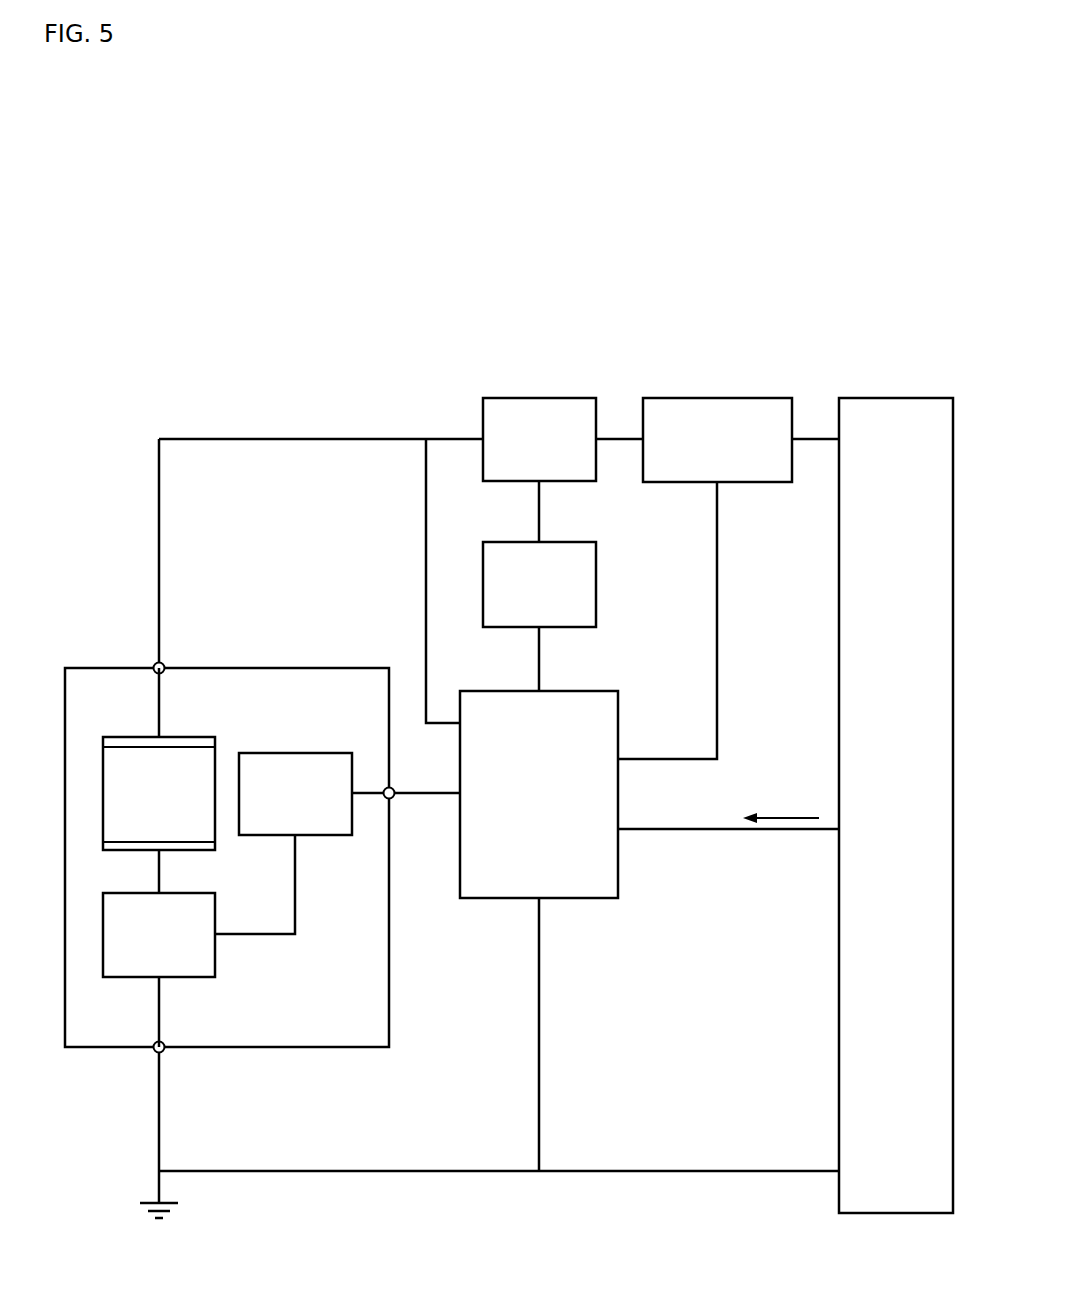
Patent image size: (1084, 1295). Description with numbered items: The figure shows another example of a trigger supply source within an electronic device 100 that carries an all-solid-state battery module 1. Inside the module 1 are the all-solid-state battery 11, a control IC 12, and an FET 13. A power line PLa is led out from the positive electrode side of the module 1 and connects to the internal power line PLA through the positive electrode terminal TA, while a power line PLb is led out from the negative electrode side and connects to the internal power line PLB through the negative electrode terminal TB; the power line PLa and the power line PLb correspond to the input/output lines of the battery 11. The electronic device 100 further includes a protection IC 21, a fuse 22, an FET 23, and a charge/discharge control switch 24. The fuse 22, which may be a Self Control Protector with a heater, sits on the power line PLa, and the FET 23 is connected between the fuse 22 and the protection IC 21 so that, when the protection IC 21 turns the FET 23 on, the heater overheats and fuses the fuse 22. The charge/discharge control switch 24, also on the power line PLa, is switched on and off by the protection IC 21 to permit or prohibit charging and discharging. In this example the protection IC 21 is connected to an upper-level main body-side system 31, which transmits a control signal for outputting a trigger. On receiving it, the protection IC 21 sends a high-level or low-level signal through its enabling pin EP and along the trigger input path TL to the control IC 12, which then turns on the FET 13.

The electronic device 100 is at (443, 287).
The all-solid-state battery module 1 is at (231, 667).
The all-solid-state battery 11 is at (178, 737).
The control IC 12 is at (293, 752).
The FET 13 is at (178, 893).
The protection IC 21 is at (575, 690).
The fuse 22 is at (575, 397).
The FET 23 is at (575, 541).
The charge/discharge control switch 24 is at (716, 397).
The main body-side system 31 is at (894, 397).
The positive electrode terminal TA is at (154, 664).
The negative electrode terminal TB is at (153, 1051).
The power line PLA is at (158, 706).
The power line PLB is at (158, 1011).
The power line PLa is at (258, 438).
The power line PLb is at (260, 1173).
The trigger input path TL is at (368, 785).
The enabling pin EP is at (393, 790).